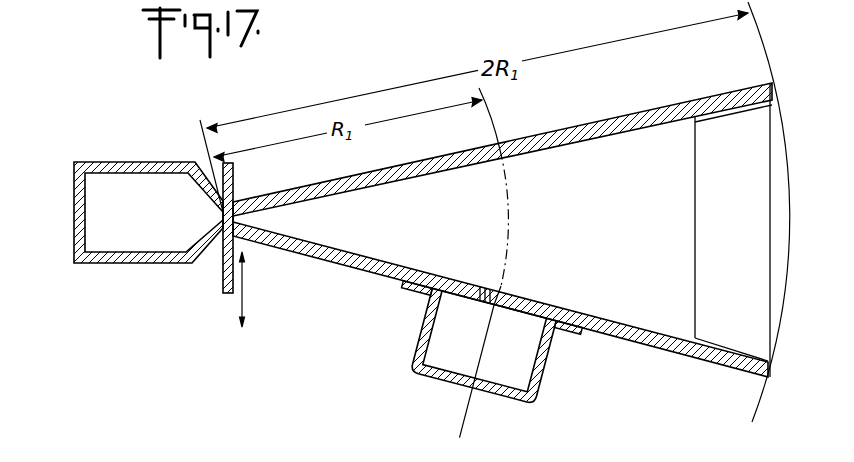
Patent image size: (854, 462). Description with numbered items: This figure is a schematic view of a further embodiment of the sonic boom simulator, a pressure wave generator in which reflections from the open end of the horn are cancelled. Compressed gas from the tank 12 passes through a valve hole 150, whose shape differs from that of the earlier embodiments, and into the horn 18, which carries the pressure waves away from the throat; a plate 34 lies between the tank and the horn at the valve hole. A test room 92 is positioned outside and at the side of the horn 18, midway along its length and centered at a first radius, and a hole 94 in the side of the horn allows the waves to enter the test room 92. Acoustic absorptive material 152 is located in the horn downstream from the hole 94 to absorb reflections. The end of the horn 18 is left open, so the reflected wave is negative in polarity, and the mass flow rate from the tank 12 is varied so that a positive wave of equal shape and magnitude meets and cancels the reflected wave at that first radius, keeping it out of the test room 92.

The compressed gas tank 12 is at (127, 161).
The plate 34 is at (222, 273).
The valve hole 150 is at (233, 207).
The horn 18 is at (642, 110).
The acoustic absorptive material 152 is at (695, 192).
The hole 94 is at (508, 297).
The test room 92 is at (543, 369).